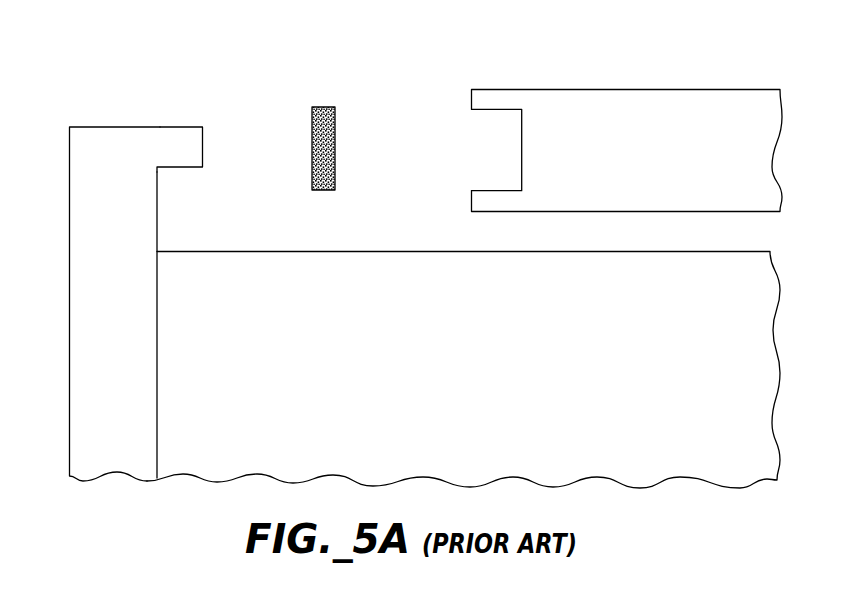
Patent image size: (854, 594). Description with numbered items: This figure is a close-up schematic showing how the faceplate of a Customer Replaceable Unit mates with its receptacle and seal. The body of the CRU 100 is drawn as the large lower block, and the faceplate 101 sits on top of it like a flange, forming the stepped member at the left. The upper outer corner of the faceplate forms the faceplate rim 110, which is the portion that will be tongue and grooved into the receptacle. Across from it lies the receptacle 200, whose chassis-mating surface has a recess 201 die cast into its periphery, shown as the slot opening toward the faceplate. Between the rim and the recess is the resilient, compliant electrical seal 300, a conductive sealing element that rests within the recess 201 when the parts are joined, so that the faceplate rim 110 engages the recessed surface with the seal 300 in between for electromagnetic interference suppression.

The CRU 100 is at (468, 378).
The faceplate 101 is at (128, 377).
The faceplate rim 110 is at (172, 118).
The receptacle 200 is at (633, 164).
The recess 201 is at (507, 128).
The seal 300 is at (323, 98).